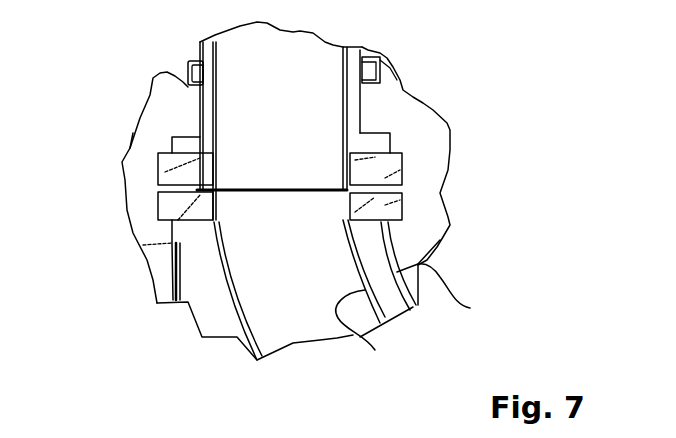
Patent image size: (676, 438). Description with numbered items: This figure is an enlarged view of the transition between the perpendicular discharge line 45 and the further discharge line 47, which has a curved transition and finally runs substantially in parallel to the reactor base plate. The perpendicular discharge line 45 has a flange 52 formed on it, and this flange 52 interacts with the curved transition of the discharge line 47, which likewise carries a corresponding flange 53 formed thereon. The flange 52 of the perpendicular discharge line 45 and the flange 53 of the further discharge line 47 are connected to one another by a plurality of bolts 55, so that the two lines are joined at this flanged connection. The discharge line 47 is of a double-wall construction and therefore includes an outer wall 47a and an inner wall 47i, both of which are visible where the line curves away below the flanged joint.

The perpendicular discharge line 45 is at (297, 73).
The discharge line 47 is at (290, 310).
The outer wall 47a is at (470, 308).
The inner wall 47i is at (375, 350).
The flange 52 is at (170, 170).
The flange 53 is at (170, 208).
The bolts 55 is at (393, 128).